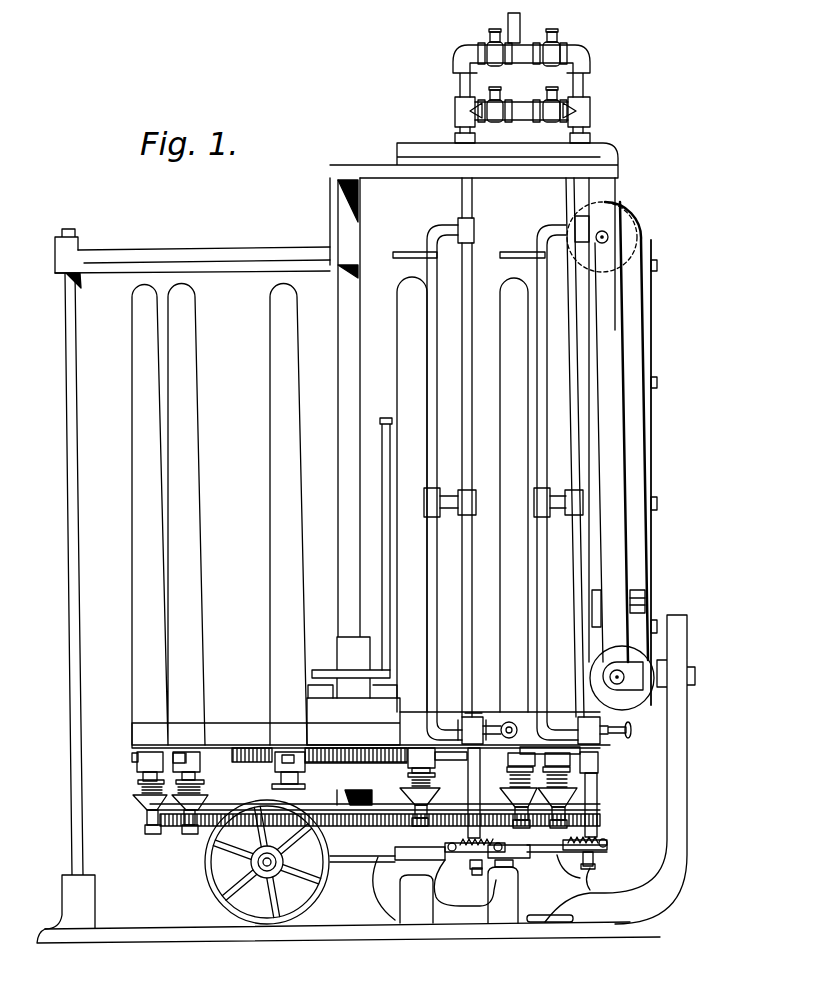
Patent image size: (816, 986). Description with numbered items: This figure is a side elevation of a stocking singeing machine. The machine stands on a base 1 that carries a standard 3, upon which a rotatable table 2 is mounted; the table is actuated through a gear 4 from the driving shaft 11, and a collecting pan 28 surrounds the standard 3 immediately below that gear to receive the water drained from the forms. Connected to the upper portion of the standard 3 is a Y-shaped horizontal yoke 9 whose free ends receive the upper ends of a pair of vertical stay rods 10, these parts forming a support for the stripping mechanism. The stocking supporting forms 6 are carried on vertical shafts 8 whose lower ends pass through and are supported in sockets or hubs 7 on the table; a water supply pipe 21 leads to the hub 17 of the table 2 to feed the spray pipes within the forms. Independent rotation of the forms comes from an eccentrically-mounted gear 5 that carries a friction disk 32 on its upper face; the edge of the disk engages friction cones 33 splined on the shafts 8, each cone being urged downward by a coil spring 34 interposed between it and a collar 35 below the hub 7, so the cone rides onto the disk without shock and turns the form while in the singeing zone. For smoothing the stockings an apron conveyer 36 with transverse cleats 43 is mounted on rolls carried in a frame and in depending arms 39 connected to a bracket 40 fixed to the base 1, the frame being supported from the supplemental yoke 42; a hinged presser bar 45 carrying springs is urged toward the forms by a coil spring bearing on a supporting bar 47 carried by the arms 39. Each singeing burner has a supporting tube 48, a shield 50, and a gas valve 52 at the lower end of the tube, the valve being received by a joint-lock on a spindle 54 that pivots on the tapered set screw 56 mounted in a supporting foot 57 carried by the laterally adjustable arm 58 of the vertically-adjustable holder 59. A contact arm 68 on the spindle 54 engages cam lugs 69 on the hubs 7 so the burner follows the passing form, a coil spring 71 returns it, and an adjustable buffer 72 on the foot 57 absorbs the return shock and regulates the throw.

The base 1 is at (167, 938).
The rotatable table 2 is at (236, 733).
The standard 3 is at (350, 375).
The gear 4 is at (282, 762).
The eccentrically-mounted gear 5 is at (205, 828).
The supporting forms 6 is at (178, 493).
The socket or hub 7 is at (140, 766).
The vertically-arranged shafts 8 is at (189, 835).
The Y-shaped yoke 9 is at (211, 262).
The stay rods 10 is at (68, 620).
The driving shaft 11 is at (262, 866).
The hub of the table 17 is at (353, 721).
The water supply pipe 21 is at (392, 627).
The collecting pan 28 is at (356, 765).
The friction disk 32 is at (322, 812).
The friction cones 33 is at (148, 803).
The coil springs 34 is at (140, 790).
The collars 35 is at (201, 779).
The apron conveyer 36 is at (652, 452).
The arms 39 is at (608, 354).
The bracket 40 is at (687, 716).
The supplemental yoke 42 is at (388, 172).
The cleats 43 is at (657, 386).
The presser bar 45 is at (598, 562).
The supporting bar 47 is at (645, 594).
The supporting tube 48 is at (605, 540).
The shield 50 is at (406, 252).
The valve 52 is at (470, 717).
The spindle 54 is at (470, 798).
The set screw 56 is at (470, 865).
The supporting foot 57 is at (592, 881).
The laterally adjustable arm 58 is at (576, 870).
The vertically-adjustable holder 59 is at (400, 862).
The contact arm 68 is at (602, 768).
The cam lugs 69 is at (200, 768).
The coil spring 71 is at (563, 843).
The adjustable buffer 72 is at (490, 877).